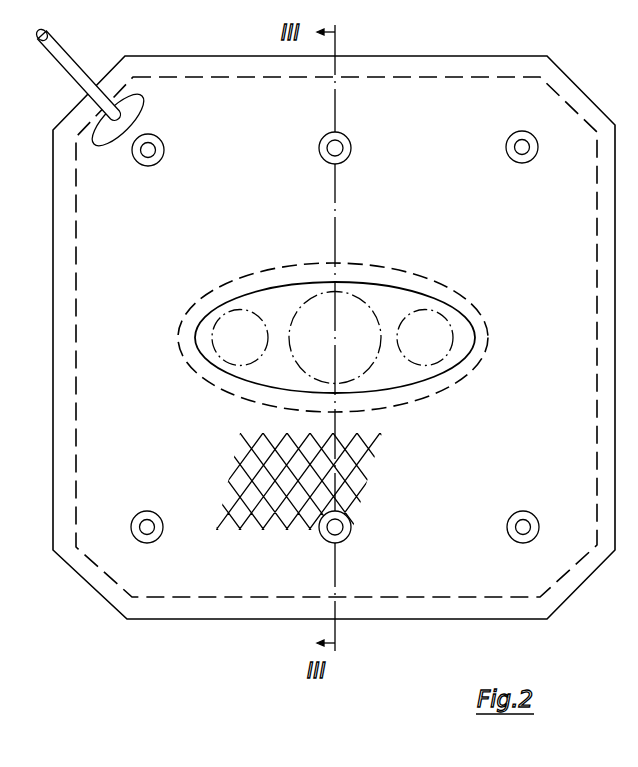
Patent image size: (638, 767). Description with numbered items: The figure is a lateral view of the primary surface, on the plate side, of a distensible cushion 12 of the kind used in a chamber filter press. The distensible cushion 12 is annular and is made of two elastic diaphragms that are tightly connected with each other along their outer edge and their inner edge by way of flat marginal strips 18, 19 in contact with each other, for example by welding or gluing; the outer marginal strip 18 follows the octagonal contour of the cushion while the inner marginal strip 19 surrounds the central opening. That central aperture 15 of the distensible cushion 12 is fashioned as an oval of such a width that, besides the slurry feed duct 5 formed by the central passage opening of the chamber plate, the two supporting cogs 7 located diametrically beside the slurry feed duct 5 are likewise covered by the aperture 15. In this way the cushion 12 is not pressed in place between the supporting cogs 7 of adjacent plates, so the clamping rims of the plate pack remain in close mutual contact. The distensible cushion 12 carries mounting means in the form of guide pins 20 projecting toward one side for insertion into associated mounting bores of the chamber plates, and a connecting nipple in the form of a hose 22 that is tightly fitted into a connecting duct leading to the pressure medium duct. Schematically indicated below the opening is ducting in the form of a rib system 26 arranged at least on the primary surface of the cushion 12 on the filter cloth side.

The distensible cushion 12 is at (188, 630).
The marginal strip 18 is at (440, 69).
The guide pins 20 is at (152, 152).
The hose 22 is at (63, 62).
The slurry feed duct 5 is at (317, 303).
The supporting cogs 7 is at (215, 347).
The central aperture 15 is at (394, 293).
The marginal strip 19 is at (427, 387).
The rib system 26 is at (280, 517).